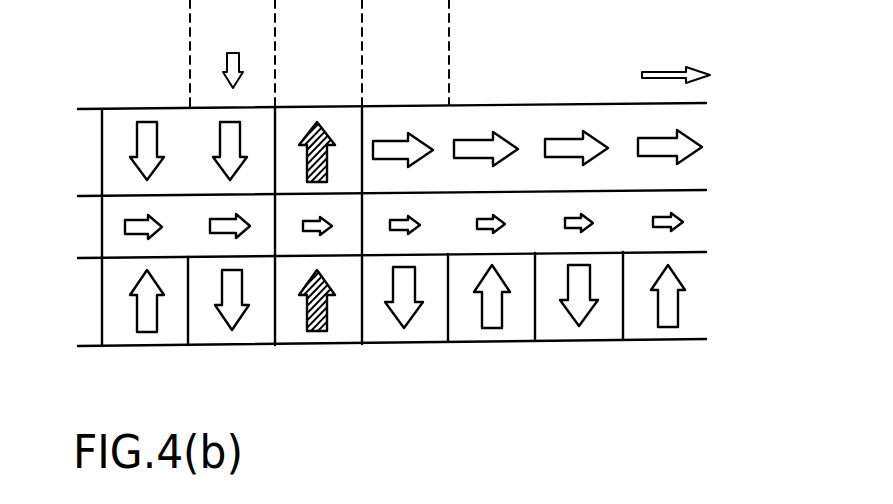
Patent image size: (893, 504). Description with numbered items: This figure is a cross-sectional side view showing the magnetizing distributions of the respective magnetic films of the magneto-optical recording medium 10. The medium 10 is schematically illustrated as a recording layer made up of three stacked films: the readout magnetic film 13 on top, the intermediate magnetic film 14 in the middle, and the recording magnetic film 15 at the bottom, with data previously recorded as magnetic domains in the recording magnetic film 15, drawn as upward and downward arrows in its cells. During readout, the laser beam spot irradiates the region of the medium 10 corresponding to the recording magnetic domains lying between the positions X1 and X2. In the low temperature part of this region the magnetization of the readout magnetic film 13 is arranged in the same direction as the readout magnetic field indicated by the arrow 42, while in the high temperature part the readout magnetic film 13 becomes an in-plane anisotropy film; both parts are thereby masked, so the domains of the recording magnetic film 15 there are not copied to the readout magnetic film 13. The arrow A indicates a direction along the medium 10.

The magneto-optical recording medium 10 is at (757, 128).
The readout magnetic film 13 is at (441, 151).
The intermediate magnetic film 14 is at (438, 223).
The recording magnetic film 15 is at (441, 299).
The readout magnetic field arrow 42 is at (234, 49).
The first position of readout beam spot region X1 is at (190, 108).
The second position of readout beam spot region X2 is at (449, 105).
The direction of medium movement A is at (688, 70).